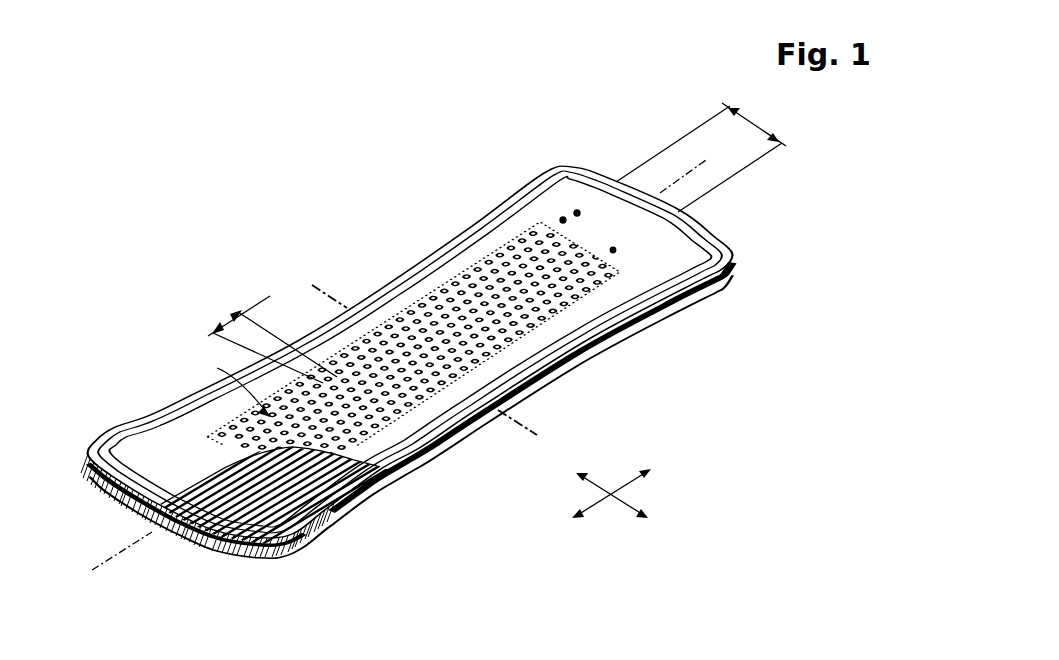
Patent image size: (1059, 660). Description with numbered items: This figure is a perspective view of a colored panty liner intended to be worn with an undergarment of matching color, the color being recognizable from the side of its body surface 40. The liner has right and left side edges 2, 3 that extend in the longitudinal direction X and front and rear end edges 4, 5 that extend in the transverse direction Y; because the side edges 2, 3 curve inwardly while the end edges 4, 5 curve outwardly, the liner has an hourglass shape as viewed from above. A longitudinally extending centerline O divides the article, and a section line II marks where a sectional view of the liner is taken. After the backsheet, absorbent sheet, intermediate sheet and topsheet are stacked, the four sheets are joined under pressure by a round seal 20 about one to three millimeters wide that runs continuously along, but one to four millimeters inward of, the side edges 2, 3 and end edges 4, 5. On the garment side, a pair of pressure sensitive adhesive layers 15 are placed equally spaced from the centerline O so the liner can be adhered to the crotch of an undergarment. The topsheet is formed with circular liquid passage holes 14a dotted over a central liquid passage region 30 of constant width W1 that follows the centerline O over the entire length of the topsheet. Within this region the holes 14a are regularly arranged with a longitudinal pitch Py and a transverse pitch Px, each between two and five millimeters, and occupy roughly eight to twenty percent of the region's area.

The right side edge 2 is at (380, 288).
The left side edge 3 is at (573, 350).
The front end edge 4 is at (110, 485).
The rear end edge 5 is at (708, 222).
The liquid passage holes 14a is at (577, 211).
The pressure sensitive adhesive layers 15 is at (207, 438).
The round seal 20 is at (628, 300).
The central liquid passage region 30 is at (615, 252).
The body surface 40 is at (437, 283).
The constant width W1 is at (701, 157).
The centerline O is at (395, 370).
The line II— II is at (420, 364).
The transverse pitch Px is at (231, 385).
The longitudinal pitch Py is at (272, 339).
The longitudinal direction X is at (616, 502).
The transverse direction Y is at (616, 490).